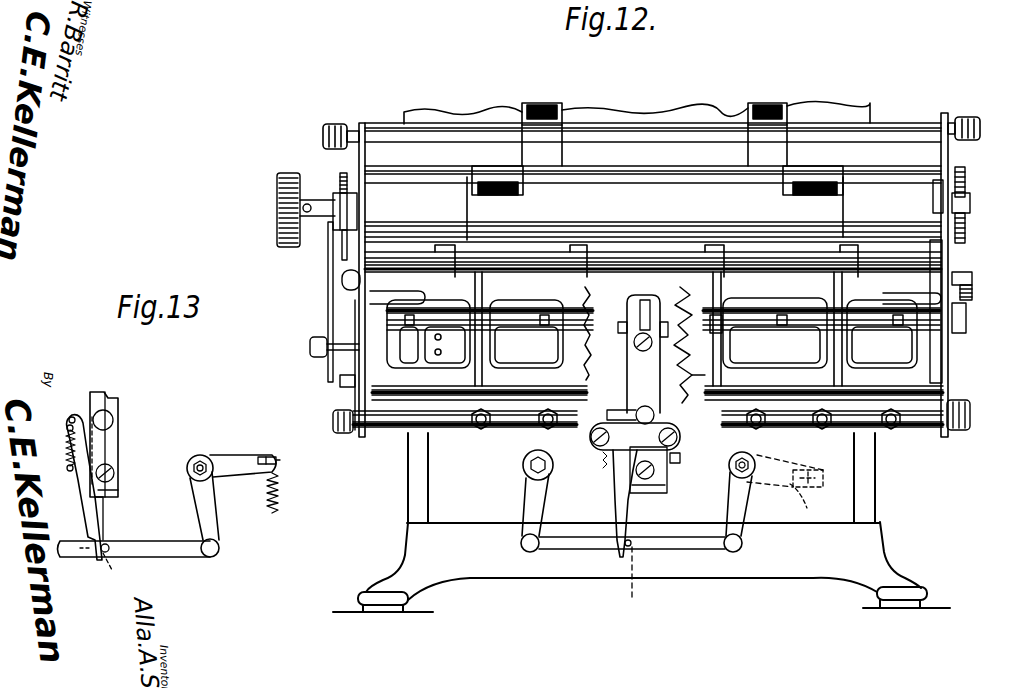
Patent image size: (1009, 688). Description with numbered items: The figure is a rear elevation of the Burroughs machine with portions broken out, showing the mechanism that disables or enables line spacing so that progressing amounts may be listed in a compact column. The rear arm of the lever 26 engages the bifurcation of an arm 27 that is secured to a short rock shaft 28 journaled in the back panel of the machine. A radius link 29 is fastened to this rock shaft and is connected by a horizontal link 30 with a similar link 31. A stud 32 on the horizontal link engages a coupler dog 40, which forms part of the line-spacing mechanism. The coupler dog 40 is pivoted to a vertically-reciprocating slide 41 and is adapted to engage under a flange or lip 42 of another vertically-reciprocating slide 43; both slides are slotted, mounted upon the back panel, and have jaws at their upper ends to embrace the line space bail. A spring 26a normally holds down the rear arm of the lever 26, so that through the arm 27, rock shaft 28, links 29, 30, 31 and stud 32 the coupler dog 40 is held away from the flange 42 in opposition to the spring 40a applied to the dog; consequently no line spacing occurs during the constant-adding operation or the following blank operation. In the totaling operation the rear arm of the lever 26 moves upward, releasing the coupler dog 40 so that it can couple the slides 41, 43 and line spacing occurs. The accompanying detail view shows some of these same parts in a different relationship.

In FIG. 12, the lever 26 is at (812, 478).
In FIG. 13, the lever 26 is at (283, 461).
In FIG. 13, the spring 26a is at (282, 503).
In FIG. 12, the arm 27 is at (811, 505).
In FIG. 13, the arm 27 is at (225, 453).
In FIG. 12, the rock shaft 28 is at (733, 458).
In FIG. 12, the radius link 29 is at (747, 530).
In FIG. 13, the radius link 29 is at (212, 520).
In FIG. 12, the horizontal link 30 is at (587, 548).
In FIG. 13, the horizontal link 30 is at (174, 552).
In FIG. 12, the link 31 is at (530, 505).
In FIG. 12, the stud 32 is at (638, 583).
In FIG. 13, the stud 32 is at (107, 570).
In FIG. 12, the coupler dog 40 is at (613, 497).
In FIG. 13, the coupler dog 40 is at (82, 502).
In FIG. 12, the spring 40a is at (603, 449).
In FIG. 13, the spring 40a is at (66, 446).
In FIG. 12, the vertically-reciprocating slide 41 is at (633, 383).
In FIG. 13, the vertically-reciprocating slide 41 is at (117, 457).
In FIG. 12, the flange 42 is at (652, 493).
In FIG. 12, the vertically-reciprocating slide 43 is at (683, 345).